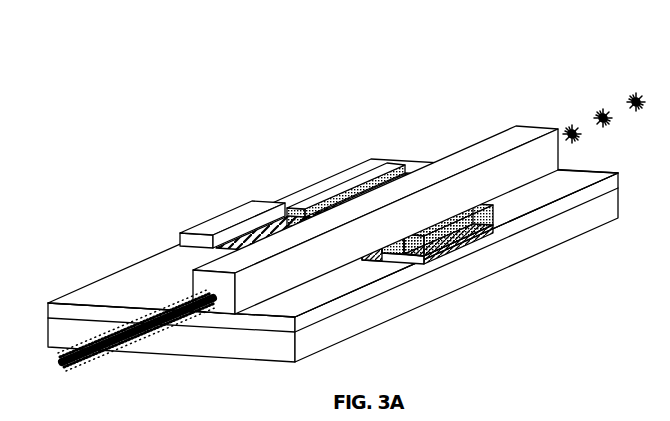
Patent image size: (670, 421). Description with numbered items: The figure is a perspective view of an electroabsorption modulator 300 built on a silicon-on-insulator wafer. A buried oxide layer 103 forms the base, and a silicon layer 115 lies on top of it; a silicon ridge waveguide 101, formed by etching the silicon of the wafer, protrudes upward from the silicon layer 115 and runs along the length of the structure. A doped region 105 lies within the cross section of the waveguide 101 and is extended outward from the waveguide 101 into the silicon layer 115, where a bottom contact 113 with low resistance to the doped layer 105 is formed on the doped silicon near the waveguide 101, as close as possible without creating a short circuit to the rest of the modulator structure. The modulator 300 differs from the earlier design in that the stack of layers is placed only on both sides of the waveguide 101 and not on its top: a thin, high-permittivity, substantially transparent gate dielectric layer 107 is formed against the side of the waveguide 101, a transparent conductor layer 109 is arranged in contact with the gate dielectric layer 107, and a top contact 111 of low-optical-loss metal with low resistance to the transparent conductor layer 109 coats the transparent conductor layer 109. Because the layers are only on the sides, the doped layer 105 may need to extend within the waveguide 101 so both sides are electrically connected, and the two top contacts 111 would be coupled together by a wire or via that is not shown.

The modulator 300 is at (127, 104).
The silicon ridge waveguide 101 is at (545, 125).
The buried oxide layer 103 is at (557, 245).
The silicon layer 115 is at (593, 195).
The bottom contact 113 is at (215, 237).
The doped region 105 is at (330, 190).
The gate dielectric layer 107 is at (323, 178).
The transparent conductor layer 109 is at (343, 182).
The top contact 111 is at (363, 173).